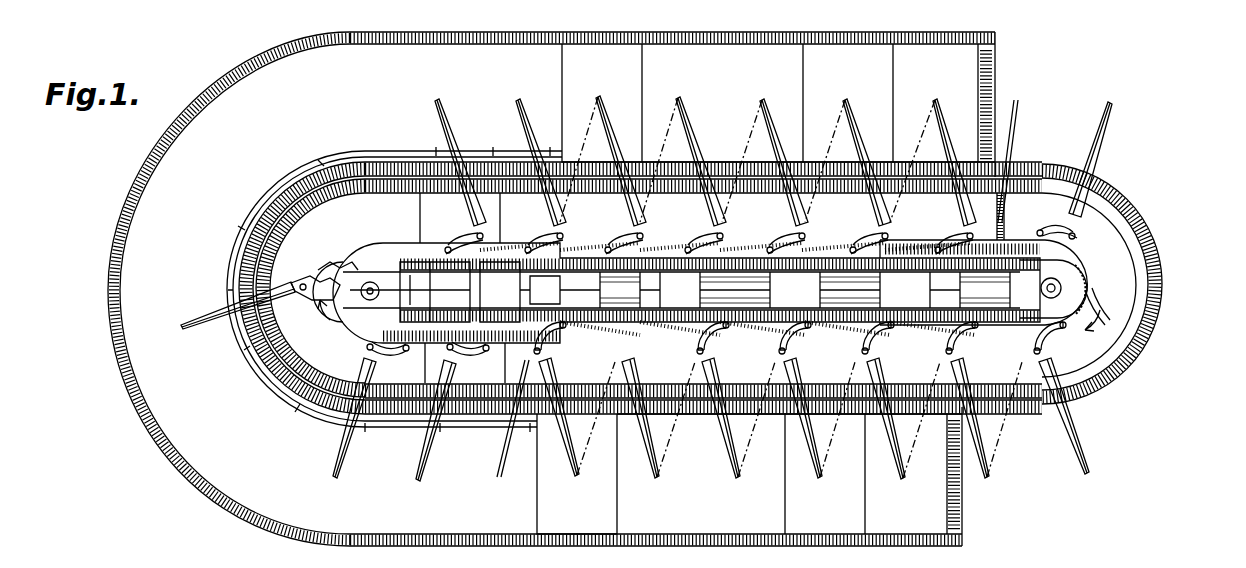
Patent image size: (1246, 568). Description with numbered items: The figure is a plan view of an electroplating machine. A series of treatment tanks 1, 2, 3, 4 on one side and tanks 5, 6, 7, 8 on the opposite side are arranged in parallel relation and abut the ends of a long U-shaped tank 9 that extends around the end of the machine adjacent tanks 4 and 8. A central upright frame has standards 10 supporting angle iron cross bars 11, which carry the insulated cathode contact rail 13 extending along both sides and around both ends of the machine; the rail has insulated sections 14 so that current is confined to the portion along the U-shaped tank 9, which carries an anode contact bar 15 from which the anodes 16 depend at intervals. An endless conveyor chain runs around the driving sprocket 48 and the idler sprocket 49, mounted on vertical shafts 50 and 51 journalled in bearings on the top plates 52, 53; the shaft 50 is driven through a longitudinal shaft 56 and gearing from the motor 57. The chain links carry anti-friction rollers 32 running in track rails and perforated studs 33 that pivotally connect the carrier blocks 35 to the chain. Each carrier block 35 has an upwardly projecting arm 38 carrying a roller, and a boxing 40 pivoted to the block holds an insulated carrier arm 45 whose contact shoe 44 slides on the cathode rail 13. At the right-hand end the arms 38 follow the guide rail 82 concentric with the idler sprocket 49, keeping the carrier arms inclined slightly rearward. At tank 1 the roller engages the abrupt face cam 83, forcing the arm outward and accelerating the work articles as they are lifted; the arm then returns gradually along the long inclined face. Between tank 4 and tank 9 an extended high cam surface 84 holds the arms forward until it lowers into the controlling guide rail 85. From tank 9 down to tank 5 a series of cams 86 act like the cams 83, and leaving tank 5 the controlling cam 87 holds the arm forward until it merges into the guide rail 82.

The tank 1 is at (913, 474).
The tank 2 is at (825, 474).
The tank 3 is at (701, 474).
The tank 4 is at (577, 474).
The tank 5 is at (944, 103).
The tank 6 is at (848, 103).
The tank 7 is at (722, 103).
The tank 8 is at (602, 103).
The U-shaped tank 9 is at (551, 289).
The standards 10 is at (435, 292).
The angle iron cross bars 11 is at (1005, 215).
The cathode contact rail 13 is at (1112, 208).
The insulated sections 14 is at (570, 190).
The anode contact bar 15 is at (318, 163).
The anodes 16 is at (243, 227).
The anti-friction rollers 32 is at (352, 262).
The perforated studs 33 is at (315, 273).
The carrier blocks 35 is at (749, 291).
The arm 38 is at (753, 299).
The boxing 40 is at (779, 295).
The contact shoe 44 is at (746, 292).
The carrier arm 45 is at (360, 112).
The driving sprocket 48 is at (332, 262).
The idler sprocket 49 is at (1095, 322).
The vertical shaft 50 is at (377, 300).
The vertical shaft 51 is at (1053, 288).
The top plate 52 is at (330, 322).
The top plate 53 is at (970, 290).
The longitudinal shaft 56 is at (406, 292).
The motor 57 is at (540, 292).
The guide rail 82 is at (1058, 292).
The face cam 83 is at (668, 350).
The cam surface 84 is at (686, 293).
The controlling guide rail 85 is at (352, 291).
The cams 86 is at (725, 236).
The controlling cam 87 is at (983, 280).